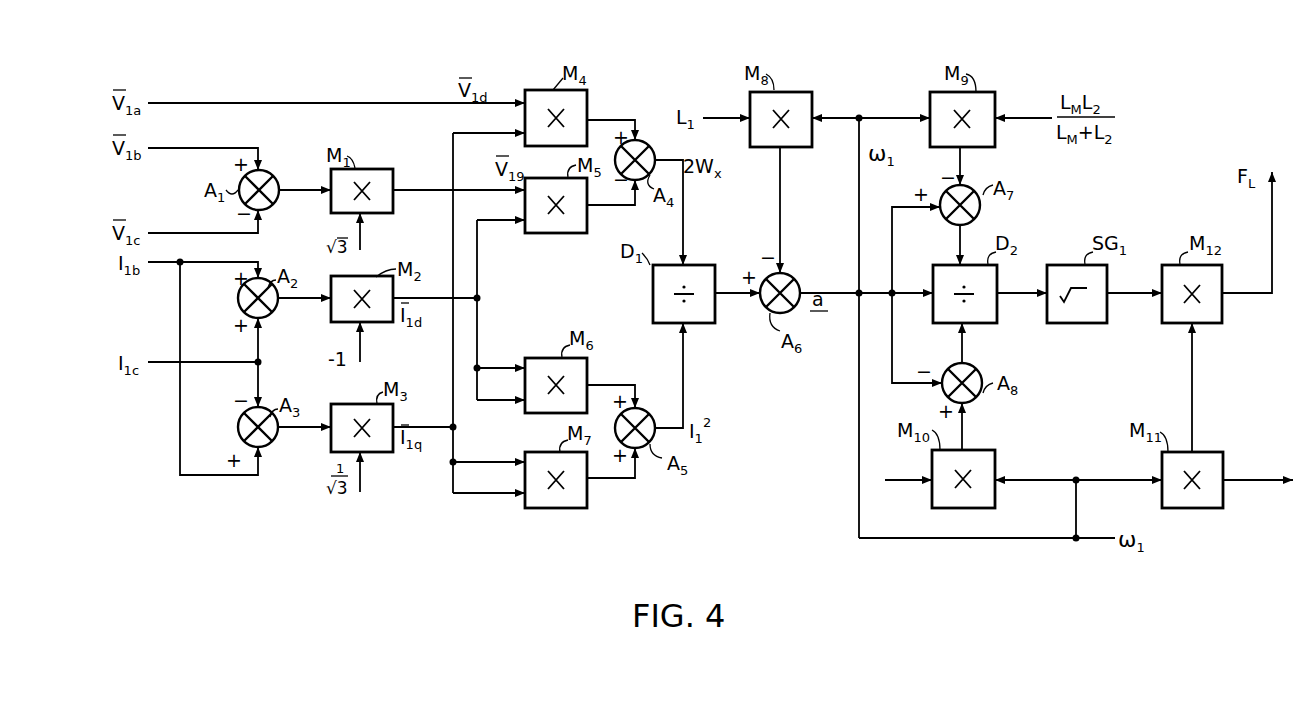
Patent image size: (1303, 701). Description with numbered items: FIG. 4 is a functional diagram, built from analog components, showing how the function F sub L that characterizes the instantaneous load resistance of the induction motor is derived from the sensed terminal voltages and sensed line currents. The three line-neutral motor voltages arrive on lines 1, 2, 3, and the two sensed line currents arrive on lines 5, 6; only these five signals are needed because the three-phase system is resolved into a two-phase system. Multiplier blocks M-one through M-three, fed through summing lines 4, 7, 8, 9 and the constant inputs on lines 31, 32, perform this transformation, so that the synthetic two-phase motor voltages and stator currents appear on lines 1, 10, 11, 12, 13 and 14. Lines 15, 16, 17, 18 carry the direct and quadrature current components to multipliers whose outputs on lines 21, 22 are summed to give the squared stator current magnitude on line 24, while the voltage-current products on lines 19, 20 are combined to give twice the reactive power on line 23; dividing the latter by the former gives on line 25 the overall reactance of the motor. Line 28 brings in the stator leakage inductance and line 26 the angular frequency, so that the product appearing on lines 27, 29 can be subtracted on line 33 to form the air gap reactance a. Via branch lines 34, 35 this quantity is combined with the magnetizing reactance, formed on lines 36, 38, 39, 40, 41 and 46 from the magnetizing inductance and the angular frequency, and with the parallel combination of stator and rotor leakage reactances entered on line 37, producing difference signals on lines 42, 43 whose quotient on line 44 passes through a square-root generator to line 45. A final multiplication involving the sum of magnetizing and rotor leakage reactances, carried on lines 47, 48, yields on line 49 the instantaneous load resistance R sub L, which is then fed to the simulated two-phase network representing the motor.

The line 1 is at (184, 103).
The line 2 is at (178, 138).
The line 3 is at (180, 233).
The adder A1 output line 4 is at (298, 178).
The line 5 is at (222, 253).
The line 6 is at (224, 362).
The I1b branch line to adder A3 7 is at (213, 475).
The adder A2 output line 8 is at (292, 298).
The adder A3 output line 9 is at (291, 427).
The line 10 is at (487, 190).
The multiplier M2 output line (I1d) 11 is at (432, 298).
The multiplier M3 output line (I1q) 12 is at (431, 426).
The line 13 is at (453, 150).
The line 14 is at (477, 232).
The input line to multiplier M6 15 is at (486, 368).
The input line to multiplier M6 16 is at (496, 400).
The input line to multiplier M7 17 is at (476, 452).
The input line to multiplier M7 18 is at (488, 494).
The multiplier M4 output line 19 is at (600, 120).
The multiplier M5 output line 20 is at (607, 205).
The multiplier M6 output line 21 is at (619, 385).
The multiplier M7 output line 22 is at (610, 480).
The adder A4 output line (2Wx) 23 is at (686, 202).
The adder A5 output line (I1 squared) 24 is at (686, 382).
The divider D1 output line 25 is at (730, 300).
The omega1 signal line 26 is at (857, 170).
The input line to multiplier M8 27 is at (838, 116).
The L1 input line 28 is at (710, 116).
The multiplier M8 output line 29 is at (798, 236).
The -1 constant input to multiplier M2 31 is at (360, 350).
The 1/sqrt(3) constant input 32 is at (360, 243).
The adder A6 output line (a) 33 is at (832, 293).
The branch line to adder A7 34 is at (891, 208).
The branch line to adder A8 35 is at (890, 342).
The input line to multiplier M9 36 is at (872, 116).
The LML2/(LM+L2) constant input line 37 is at (1010, 118).
The multiplier M9 output line 38 is at (962, 150).
The multiplier M10 output line 39 is at (964, 430).
The input line to multiplier M10 40 is at (894, 478).
The omega1 input line to multiplier M10 41 is at (1034, 474).
The adder A7 output line 42 is at (966, 233).
The adder A8 output line 43 is at (965, 357).
The divider D2 output line 44 is at (1012, 292).
The square root generator SG1 output line 45 is at (1118, 292).
The omega1 input line to multiplier M11 46 is at (1113, 476).
The multiplier M11 output line 47 is at (1246, 474).
The multiplier M11 output line to M12 48 is at (1190, 399).
The line 49 is at (1272, 238).